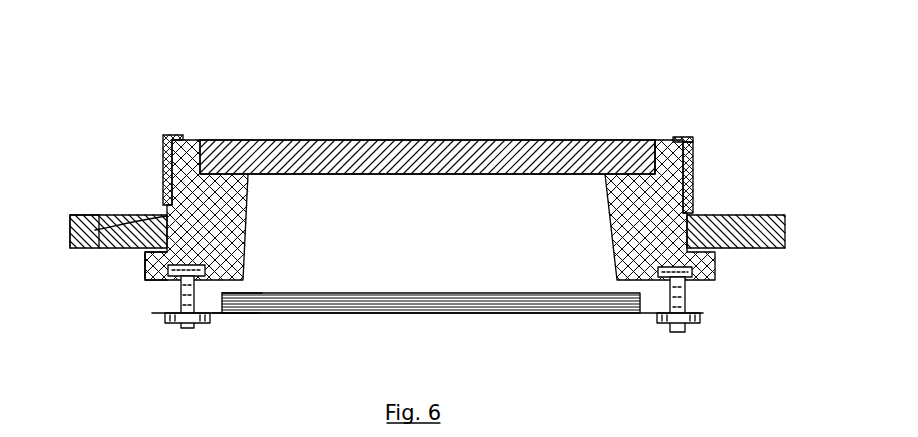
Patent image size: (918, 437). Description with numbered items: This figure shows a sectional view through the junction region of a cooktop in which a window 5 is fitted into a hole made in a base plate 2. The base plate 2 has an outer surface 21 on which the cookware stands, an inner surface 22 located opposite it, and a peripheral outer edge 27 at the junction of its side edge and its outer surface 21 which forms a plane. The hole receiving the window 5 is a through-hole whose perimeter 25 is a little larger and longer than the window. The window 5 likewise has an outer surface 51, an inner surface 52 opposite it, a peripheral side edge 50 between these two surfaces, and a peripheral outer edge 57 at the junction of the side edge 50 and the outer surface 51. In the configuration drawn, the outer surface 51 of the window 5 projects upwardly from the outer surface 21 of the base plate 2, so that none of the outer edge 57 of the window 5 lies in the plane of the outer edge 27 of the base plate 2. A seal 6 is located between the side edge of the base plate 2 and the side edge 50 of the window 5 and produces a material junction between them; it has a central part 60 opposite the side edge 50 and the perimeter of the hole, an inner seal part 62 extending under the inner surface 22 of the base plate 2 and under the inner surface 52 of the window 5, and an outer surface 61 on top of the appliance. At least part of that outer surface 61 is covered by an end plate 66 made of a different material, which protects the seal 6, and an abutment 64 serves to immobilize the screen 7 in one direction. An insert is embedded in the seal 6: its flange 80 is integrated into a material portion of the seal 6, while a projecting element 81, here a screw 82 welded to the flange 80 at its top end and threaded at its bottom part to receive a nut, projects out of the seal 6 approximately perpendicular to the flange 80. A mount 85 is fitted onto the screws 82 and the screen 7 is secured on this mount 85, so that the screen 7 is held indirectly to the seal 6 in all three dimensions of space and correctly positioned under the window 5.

The seal 6 is at (183, 110).
The peripheral side edge of the window 50 is at (202, 150).
The outer surface of the window 51 is at (303, 139).
The inner surface of the window 52 is at (345, 167).
The window 5 is at (538, 148).
The peripheral outer edge of the window 57 is at (657, 140).
The abutment 64 is at (655, 140).
The end plate 66 is at (693, 145).
The peripheral outer edge of the base plate 27 is at (693, 213).
The outer surface of the seal 61 is at (777, 132).
The outer surface of the base plate 21 is at (82, 215).
The inner surface of the base plate 22 is at (100, 215).
The base plate 2 is at (126, 215).
The perimeter of the hole 25 is at (70, 225).
The inner seal part 62 is at (100, 253).
The central part of the seal 60 is at (146, 262).
The flange 80 is at (256, 296).
The projecting element 81 is at (144, 313).
The screw 82 is at (188, 328).
The mount 85 is at (226, 314).
The screen 7 is at (398, 298).